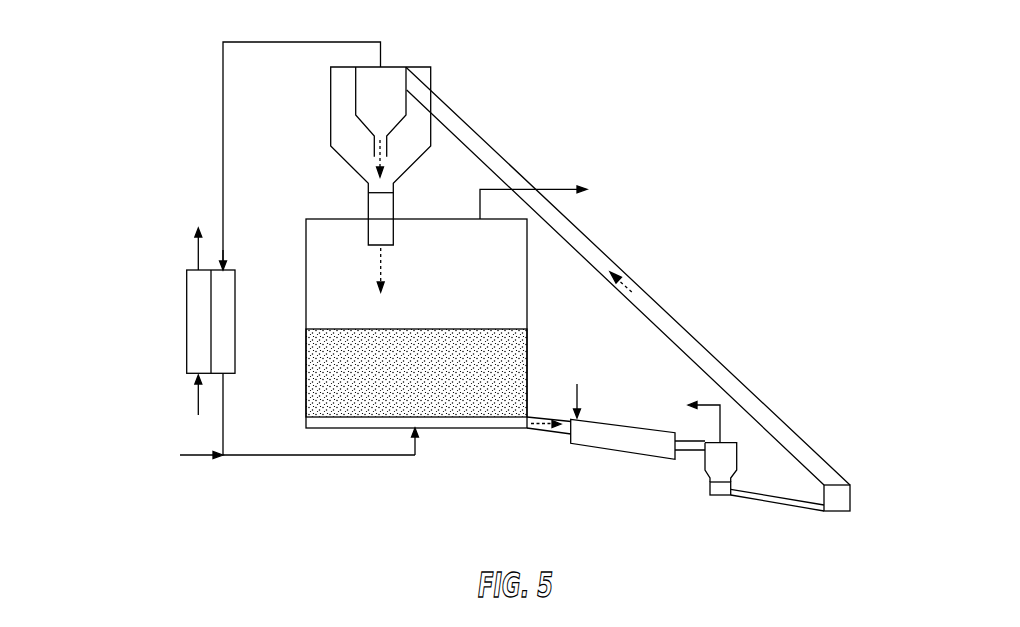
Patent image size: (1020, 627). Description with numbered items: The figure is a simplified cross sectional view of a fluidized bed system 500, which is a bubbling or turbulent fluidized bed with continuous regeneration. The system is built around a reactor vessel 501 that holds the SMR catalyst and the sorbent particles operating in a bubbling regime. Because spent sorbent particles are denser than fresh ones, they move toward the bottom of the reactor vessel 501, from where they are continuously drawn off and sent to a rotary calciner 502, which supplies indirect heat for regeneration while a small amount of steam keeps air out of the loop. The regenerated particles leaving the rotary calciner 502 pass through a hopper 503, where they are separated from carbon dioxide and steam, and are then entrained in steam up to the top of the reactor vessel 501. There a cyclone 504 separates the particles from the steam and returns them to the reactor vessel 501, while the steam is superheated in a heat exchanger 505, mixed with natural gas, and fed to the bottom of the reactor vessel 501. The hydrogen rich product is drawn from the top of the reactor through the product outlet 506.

The fluidized bed system 500 is at (815, 48).
The reactor vessel 501 is at (452, 423).
The rotary calciner 502 is at (625, 448).
The hopper 503 is at (720, 495).
The cyclone 504 is at (356, 90).
The heat exchanger 505 is at (187, 322).
The product outlet 506 is at (557, 188).